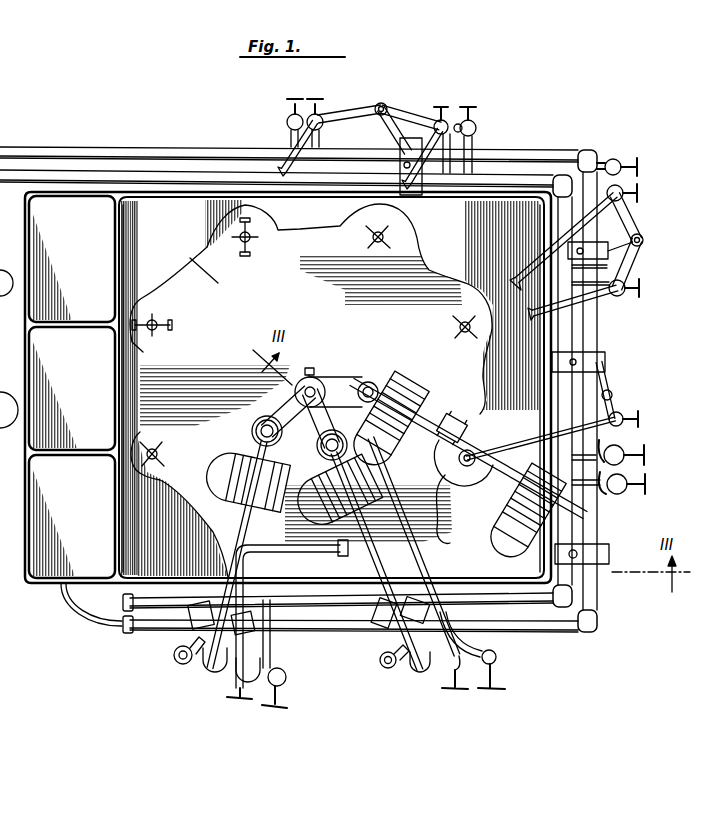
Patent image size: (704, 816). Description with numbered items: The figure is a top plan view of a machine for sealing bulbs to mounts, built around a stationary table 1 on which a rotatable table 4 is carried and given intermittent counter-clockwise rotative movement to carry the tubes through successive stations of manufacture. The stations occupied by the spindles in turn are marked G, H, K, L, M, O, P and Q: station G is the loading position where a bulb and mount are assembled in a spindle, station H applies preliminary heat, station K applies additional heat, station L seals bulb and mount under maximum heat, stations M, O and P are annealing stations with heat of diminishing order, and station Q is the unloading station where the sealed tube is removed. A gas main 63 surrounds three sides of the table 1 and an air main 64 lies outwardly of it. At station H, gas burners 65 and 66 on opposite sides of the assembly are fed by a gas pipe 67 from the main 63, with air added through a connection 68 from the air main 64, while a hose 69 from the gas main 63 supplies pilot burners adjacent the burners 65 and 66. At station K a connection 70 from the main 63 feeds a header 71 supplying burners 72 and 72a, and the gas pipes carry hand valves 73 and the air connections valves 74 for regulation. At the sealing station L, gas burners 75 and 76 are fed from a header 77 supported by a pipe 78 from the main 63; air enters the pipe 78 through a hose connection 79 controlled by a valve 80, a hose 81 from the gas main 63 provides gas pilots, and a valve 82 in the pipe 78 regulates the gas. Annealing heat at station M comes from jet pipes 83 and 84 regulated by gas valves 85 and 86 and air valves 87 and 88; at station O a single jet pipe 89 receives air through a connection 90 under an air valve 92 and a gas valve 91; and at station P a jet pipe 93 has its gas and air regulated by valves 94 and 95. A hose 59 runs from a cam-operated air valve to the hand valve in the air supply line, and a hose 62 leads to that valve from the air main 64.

The stationary table 1 is at (490, 210).
The rotatable table 4 is at (197, 262).
The hose 59 is at (600, 388).
The hose 62 is at (83, 615).
The gas main 63 is at (42, 172).
The air main 64 is at (105, 150).
The gas burner 65 is at (222, 572).
The gas burner 66 is at (274, 498).
The gas pipe 67 is at (216, 676).
The connection 68 is at (288, 672).
The hose 69 is at (282, 570).
The connection 70 is at (428, 572).
The header 71 is at (410, 455).
The burner 72 is at (352, 470).
The burner 72a is at (380, 666).
The hand valve 73 is at (247, 705).
The valve 74 is at (280, 712).
The gas burner 75 is at (460, 466).
The gas burner 76 is at (470, 486).
The header 77 is at (450, 403).
The pipe 78 is at (598, 493).
The hose connection 79 is at (628, 424).
The valve 80 is at (650, 457).
The hose 81 is at (460, 416).
The valve 82 is at (652, 490).
The jet pipe 83 is at (628, 220).
The jet pipe 84 is at (612, 300).
The valve 85 is at (624, 190).
The valve 86 is at (628, 285).
The valve 87 is at (618, 160).
The valve 88 is at (645, 252).
The jet pipe 89 is at (400, 150).
The connection 90 is at (456, 122).
The gas valve 91 is at (441, 105).
The air valve 92 is at (474, 108).
The jet pipe 93 is at (340, 115).
The valve 94 is at (318, 100).
The valve 95 is at (292, 100).
The station P is at (232, 228).
The station O is at (395, 240).
The station Q is at (152, 312).
The station G is at (145, 468).
The station M is at (470, 310).
The station H is at (178, 663).
The station K is at (330, 548).
The station L is at (448, 510).